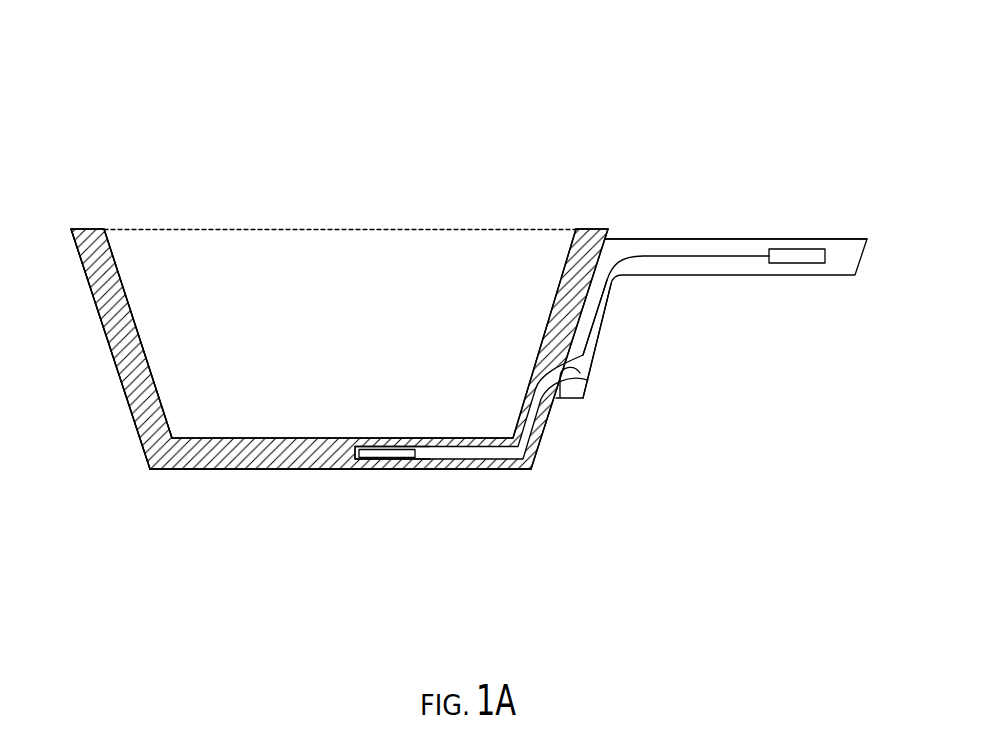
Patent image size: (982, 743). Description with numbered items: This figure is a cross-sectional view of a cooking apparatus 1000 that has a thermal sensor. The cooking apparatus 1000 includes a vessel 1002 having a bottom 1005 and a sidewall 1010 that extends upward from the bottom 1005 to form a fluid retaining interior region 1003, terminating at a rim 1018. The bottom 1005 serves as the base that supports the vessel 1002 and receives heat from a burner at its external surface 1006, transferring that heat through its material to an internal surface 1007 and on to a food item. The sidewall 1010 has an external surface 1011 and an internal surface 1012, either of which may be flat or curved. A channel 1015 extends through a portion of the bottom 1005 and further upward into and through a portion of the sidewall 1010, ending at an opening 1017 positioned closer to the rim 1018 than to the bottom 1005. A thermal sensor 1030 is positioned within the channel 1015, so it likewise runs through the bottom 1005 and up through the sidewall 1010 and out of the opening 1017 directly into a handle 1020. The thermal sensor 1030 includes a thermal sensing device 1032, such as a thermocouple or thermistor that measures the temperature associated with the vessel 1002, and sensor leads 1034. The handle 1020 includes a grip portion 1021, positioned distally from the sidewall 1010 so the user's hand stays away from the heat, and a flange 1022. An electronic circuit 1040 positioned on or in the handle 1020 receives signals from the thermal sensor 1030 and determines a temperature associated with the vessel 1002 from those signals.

The cooking apparatus 1000 is at (550, 105).
The vessel 1002 is at (437, 484).
The fluid retaining interior region 1003 is at (338, 283).
The bottom 1005 is at (244, 473).
The external surface 1006 is at (320, 471).
The internal surface 1007 is at (298, 438).
The sidewall 1010 is at (103, 333).
The external surface 1011 is at (127, 405).
The internal surface 1012 is at (147, 360).
The channel 1015 is at (503, 470).
The opening 1017 is at (580, 398).
The rim 1018 is at (592, 230).
The handle 1020 is at (733, 276).
The grip portion 1021 is at (727, 238).
The flange 1022 is at (605, 325).
The thermal sensor 1030 is at (391, 464).
The thermal sensing device 1032 is at (410, 446).
The sensor leads 1034 is at (527, 446).
The electronic circuit 1040 is at (818, 264).